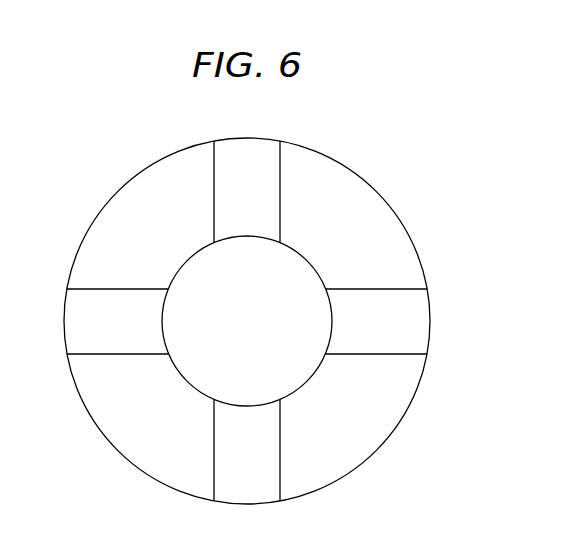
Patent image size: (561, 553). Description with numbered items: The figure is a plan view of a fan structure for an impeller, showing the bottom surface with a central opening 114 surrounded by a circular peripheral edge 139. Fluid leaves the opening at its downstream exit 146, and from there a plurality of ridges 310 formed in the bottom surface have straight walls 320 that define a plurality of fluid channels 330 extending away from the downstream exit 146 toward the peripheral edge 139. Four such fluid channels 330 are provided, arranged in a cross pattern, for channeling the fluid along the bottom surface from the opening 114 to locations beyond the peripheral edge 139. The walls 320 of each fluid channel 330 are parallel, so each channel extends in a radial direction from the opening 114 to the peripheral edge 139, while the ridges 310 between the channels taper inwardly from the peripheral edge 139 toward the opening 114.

The opening 114 is at (199, 369).
The peripheral edge 139 is at (362, 466).
The downstream exit 146 is at (314, 267).
The ridges 310 is at (110, 233).
The straight walls 320 is at (215, 165).
The fluid channels 330 is at (243, 156).